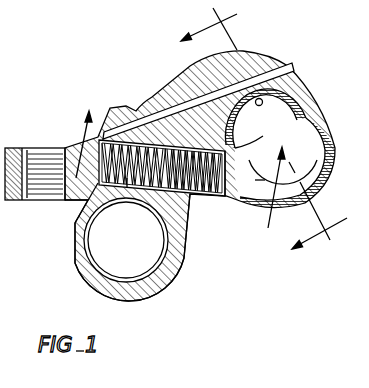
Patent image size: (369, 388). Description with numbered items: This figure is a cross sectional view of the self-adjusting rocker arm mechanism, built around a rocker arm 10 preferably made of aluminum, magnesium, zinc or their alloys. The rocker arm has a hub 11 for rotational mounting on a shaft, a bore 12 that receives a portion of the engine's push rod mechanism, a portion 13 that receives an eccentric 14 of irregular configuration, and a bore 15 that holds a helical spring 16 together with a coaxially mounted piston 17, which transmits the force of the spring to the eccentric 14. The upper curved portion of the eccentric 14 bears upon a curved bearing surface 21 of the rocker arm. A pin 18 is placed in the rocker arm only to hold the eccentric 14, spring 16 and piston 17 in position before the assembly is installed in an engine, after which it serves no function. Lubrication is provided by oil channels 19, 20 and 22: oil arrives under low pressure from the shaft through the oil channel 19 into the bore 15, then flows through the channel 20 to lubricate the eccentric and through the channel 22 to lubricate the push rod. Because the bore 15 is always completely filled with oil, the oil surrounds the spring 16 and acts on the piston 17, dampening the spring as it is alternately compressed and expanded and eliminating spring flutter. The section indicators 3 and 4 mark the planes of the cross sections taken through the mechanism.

The rocker arm 10 is at (163, 80).
The hub 11 is at (174, 278).
The bore 12 is at (52, 168).
The portion 13 is at (268, 110).
The eccentric 14 is at (324, 182).
The bore 15 is at (87, 202).
The helical spring 16 is at (217, 197).
The piston 17 is at (203, 197).
The pin 18 is at (262, 100).
The oil channel 19 is at (124, 188).
The oil channel 20 is at (140, 127).
The curved bearing surface 21 is at (290, 95).
The oil channel 22 is at (74, 224).
The section line 3- 3 is at (178, 171).
The section line 4- 4 is at (266, 126).